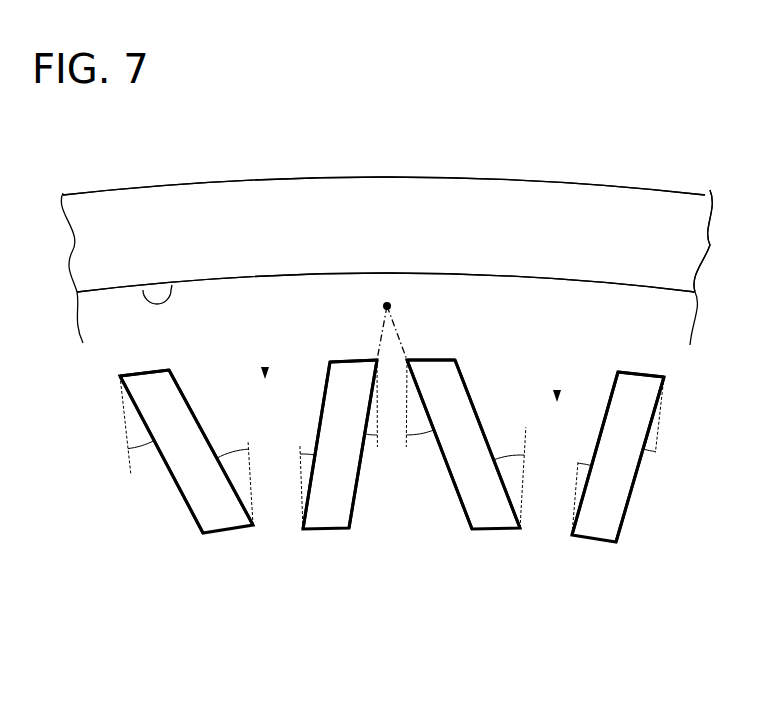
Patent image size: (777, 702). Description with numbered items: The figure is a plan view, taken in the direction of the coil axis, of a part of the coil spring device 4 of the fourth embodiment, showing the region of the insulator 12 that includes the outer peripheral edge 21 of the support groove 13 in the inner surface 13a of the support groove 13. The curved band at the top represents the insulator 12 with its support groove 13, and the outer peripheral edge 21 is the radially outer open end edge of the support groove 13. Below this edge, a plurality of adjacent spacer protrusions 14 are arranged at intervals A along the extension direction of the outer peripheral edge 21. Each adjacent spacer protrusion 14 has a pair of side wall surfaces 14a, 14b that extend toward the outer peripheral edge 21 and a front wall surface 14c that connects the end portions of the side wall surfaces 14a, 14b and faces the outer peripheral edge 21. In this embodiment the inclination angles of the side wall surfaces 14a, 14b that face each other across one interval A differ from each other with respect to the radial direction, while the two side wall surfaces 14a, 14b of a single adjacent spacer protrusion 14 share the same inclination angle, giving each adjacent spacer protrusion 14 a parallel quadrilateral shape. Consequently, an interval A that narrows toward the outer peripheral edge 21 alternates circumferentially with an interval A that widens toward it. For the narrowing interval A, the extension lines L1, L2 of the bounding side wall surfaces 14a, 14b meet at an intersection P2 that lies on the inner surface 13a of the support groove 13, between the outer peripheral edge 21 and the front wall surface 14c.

The coil spring device 4 is at (672, 152).
The insulator 12 is at (207, 183).
The support groove 13 is at (597, 291).
The inner surface of the support groove 13a is at (495, 297).
The adjacent spacer protrusion 14 is at (223, 520).
The side wall surface 14a is at (193, 517).
The side wall surface 14b is at (183, 395).
The front wall surface 14c is at (147, 372).
The outer peripheral edge 21 is at (143, 290).
The intersection P2 is at (387, 302).
The extension line L1 is at (386, 308).
The extension line L2 is at (388, 308).
The interval A is at (264, 368).